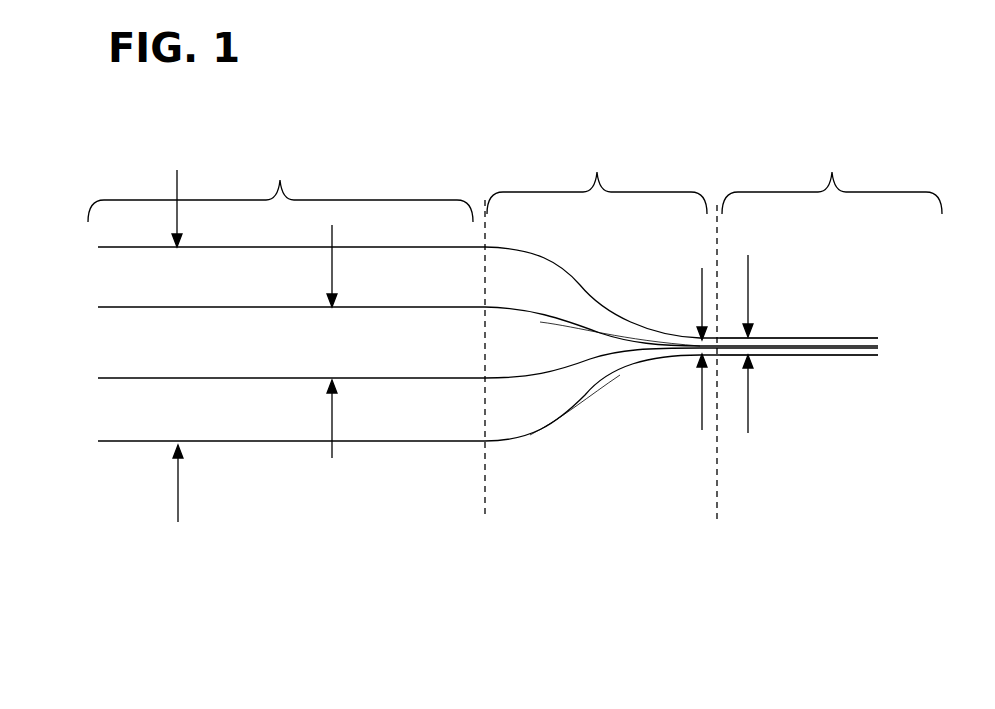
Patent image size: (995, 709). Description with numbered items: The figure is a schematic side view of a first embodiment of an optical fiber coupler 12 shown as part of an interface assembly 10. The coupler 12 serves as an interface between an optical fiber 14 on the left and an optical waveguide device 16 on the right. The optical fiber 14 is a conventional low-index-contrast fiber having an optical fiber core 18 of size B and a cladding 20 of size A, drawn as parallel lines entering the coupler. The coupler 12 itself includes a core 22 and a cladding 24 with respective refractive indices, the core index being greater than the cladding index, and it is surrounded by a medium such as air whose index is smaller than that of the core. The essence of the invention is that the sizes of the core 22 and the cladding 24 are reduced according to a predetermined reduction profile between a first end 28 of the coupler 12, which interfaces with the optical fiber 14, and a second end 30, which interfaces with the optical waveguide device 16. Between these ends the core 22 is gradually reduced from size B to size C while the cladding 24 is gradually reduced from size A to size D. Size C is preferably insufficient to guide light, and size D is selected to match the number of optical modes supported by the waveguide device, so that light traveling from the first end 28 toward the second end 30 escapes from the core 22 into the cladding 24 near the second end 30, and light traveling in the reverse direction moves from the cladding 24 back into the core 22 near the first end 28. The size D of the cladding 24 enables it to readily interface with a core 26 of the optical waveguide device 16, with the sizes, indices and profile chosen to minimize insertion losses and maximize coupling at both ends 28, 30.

The interface assembly 10 is at (512, 98).
The optical fiber coupler 12 is at (597, 175).
The optical fiber 14 is at (280, 179).
The optical waveguide device 16 is at (832, 175).
The optical fiber core 18 is at (230, 353).
The cladding 20 is at (103, 445).
The core 22 is at (537, 350).
The cladding 24 is at (529, 430).
The core 26 is at (800, 363).
The first end 28 is at (488, 442).
The second end 30 is at (713, 348).